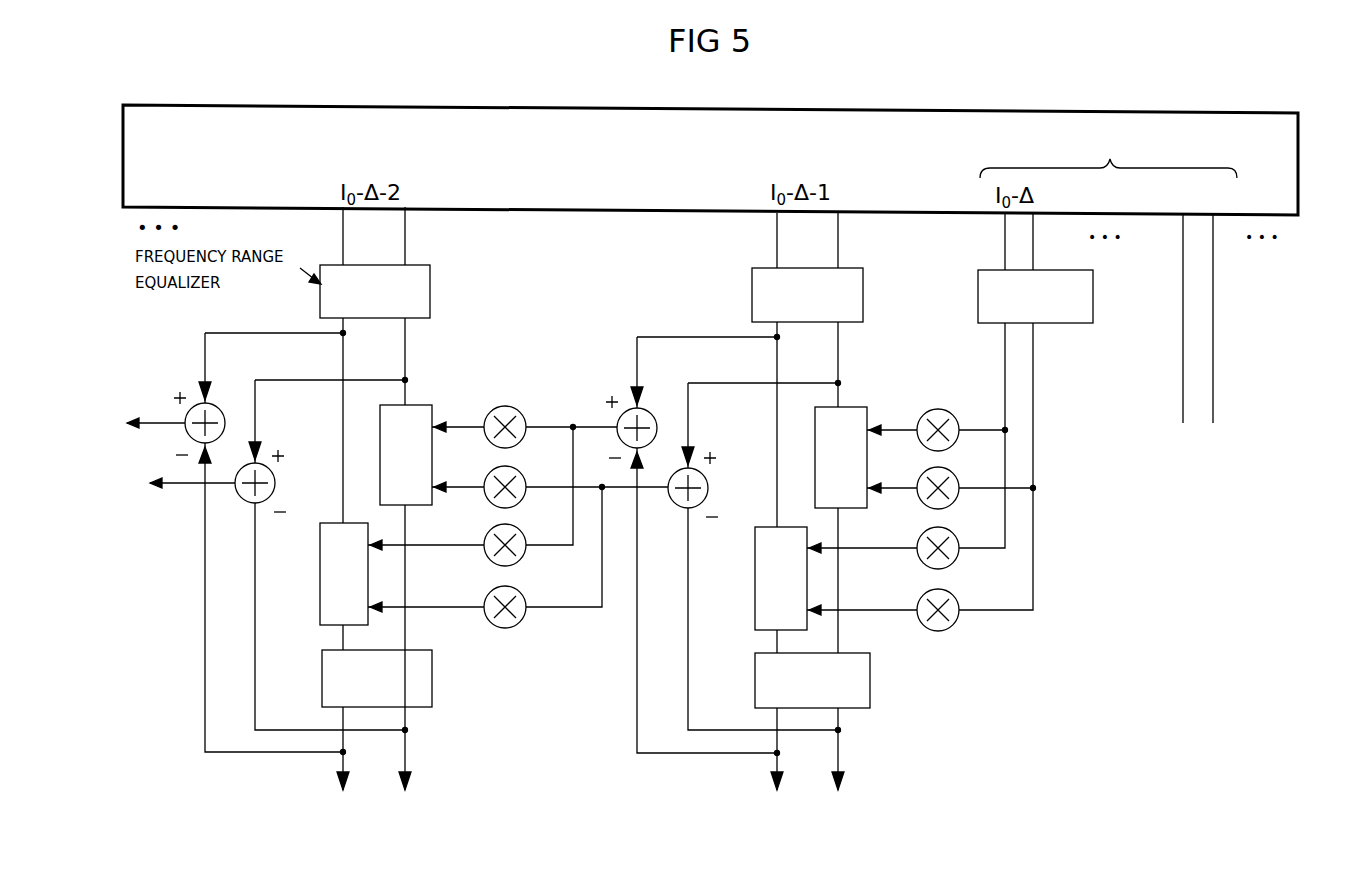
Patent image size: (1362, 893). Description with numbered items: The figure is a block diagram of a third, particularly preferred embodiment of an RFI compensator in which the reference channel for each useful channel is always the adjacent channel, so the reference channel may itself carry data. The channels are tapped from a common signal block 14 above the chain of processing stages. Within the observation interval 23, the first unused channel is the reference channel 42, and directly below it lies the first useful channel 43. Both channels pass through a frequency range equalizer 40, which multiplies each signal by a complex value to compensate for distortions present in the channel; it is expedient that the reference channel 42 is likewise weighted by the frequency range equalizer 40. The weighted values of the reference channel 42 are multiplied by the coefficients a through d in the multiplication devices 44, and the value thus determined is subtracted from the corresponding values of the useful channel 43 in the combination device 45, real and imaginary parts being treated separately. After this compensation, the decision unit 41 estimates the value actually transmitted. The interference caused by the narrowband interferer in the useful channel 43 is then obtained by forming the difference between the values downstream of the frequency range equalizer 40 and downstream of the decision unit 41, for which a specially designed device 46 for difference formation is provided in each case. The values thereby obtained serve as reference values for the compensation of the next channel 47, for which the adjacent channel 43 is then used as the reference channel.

The signal memory 14 is at (1302, 135).
The observation interval 23 is at (1108, 154).
The frequency range equalizer 40 is at (430, 297).
The decision unit 41 is at (432, 680).
The reference channel 42 is at (1015, 240).
The first useful channel 43 is at (800, 240).
The multiplication devices 44 is at (512, 638).
The combination device 45 is at (428, 403).
The device for difference formation 46 is at (215, 405).
The next channel 47 is at (390, 242).